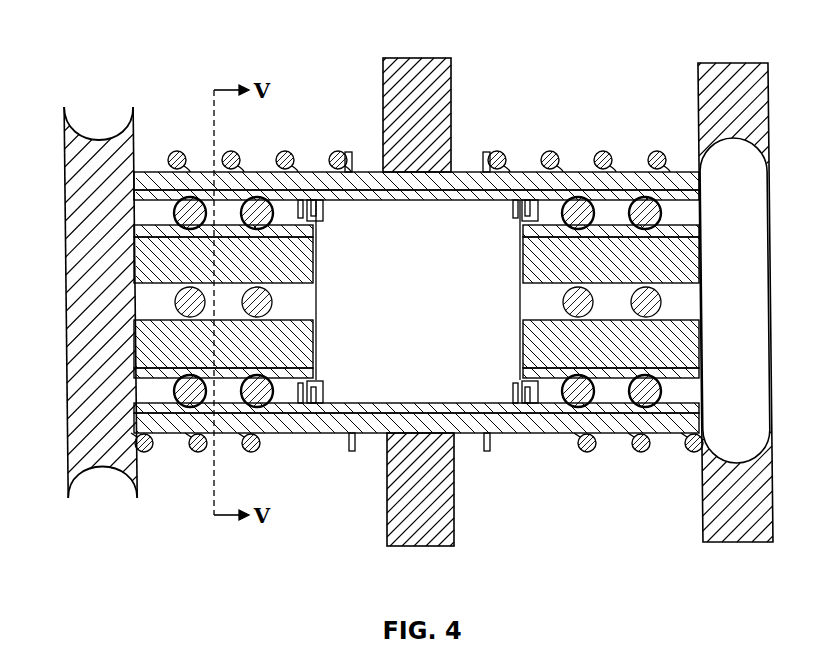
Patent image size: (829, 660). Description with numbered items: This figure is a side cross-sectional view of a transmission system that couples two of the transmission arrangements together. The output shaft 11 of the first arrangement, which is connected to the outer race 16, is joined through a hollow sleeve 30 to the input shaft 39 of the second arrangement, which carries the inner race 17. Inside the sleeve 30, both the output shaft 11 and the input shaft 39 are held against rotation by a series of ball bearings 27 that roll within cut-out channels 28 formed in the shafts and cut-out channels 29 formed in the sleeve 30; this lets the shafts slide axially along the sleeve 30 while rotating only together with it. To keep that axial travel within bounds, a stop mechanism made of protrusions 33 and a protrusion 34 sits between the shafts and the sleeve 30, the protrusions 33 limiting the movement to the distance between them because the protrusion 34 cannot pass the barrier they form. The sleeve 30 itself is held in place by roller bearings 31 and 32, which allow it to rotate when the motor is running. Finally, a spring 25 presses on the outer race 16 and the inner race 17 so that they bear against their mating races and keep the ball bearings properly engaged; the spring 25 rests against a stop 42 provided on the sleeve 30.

The output shaft 11 is at (530, 263).
The outer race 16 is at (728, 75).
The inner race 17 is at (80, 438).
The spring 25 is at (195, 453).
The ball bearings 27 is at (247, 203).
The cut-out channels 28 is at (533, 302).
The cut-out channels 29 is at (600, 193).
The hollow sleeve 30 is at (532, 433).
The roller bearing 31 is at (425, 70).
The roller bearing 32 is at (423, 537).
The protrusions 33 is at (513, 210).
The protrusion 34 is at (527, 208).
The input shaft 39 is at (302, 270).
The stop 42 is at (349, 152).